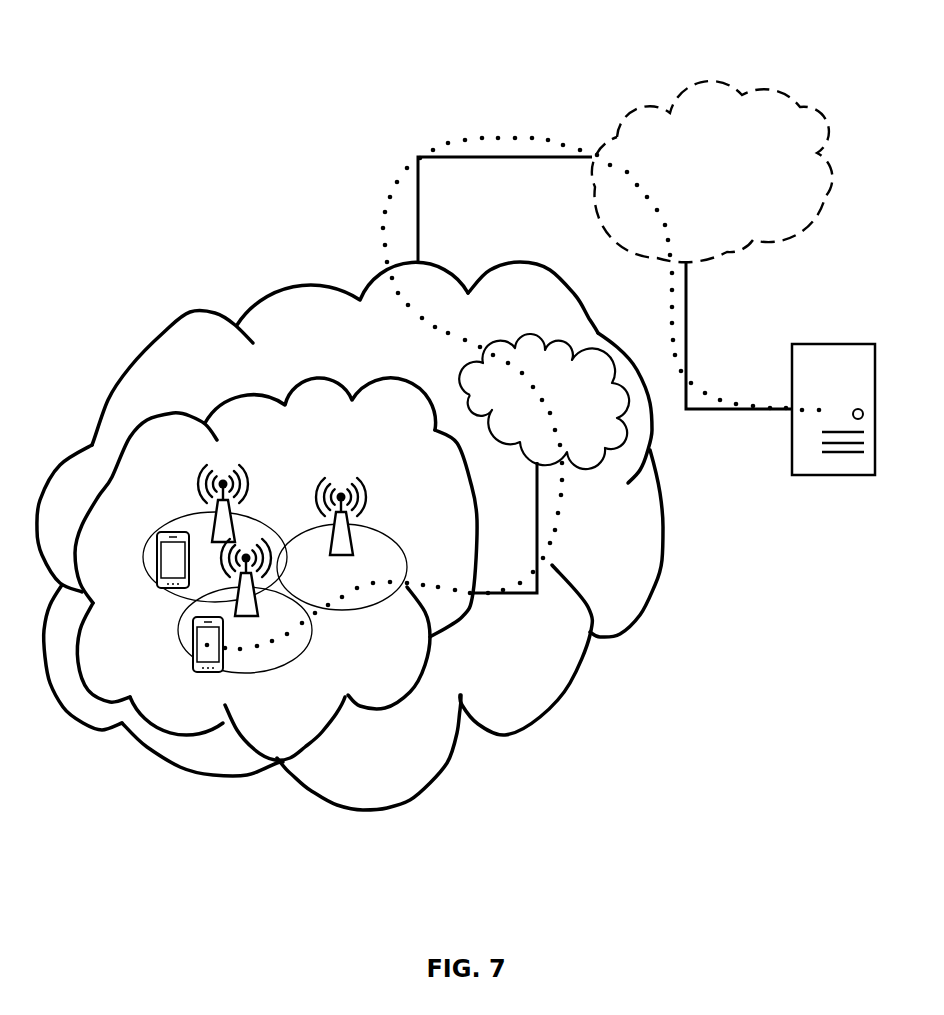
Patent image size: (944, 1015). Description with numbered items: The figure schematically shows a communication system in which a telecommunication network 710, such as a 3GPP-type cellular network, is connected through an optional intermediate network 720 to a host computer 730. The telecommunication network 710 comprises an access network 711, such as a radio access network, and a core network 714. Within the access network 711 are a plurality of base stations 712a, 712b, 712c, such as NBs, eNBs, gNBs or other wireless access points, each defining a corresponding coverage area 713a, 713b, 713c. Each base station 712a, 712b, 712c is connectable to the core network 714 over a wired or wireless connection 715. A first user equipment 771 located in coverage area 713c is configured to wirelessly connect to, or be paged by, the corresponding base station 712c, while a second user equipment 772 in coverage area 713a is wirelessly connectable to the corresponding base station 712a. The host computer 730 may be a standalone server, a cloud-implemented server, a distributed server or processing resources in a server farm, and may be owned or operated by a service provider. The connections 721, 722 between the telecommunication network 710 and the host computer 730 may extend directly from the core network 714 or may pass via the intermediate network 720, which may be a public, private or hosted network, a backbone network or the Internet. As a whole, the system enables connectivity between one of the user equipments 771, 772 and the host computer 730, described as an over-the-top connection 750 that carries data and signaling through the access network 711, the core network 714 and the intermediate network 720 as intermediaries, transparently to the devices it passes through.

The telecommunication network 710 is at (350, 536).
The access network 711 is at (276, 569).
The base station 712a is at (258, 616).
The base station 712b is at (353, 497).
The base station 712c is at (201, 483).
The coverage area 713a is at (222, 616).
The coverage area 713b is at (407, 567).
The coverage area 713c is at (165, 532).
The core network 714 is at (544, 401).
The wired or wireless connection 715 is at (537, 505).
The intermediate network 720 is at (712, 171).
The connection 721 is at (502, 158).
The connection 722 is at (742, 412).
The host computer 730 is at (833, 425).
The over-the-top (OTT) connection 750 is at (395, 184).
The first user equipment (UE) 771 is at (103, 584).
The second UE 772 is at (352, 733).